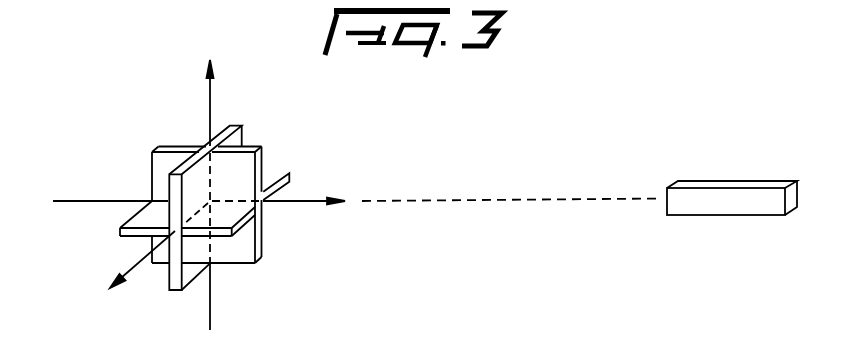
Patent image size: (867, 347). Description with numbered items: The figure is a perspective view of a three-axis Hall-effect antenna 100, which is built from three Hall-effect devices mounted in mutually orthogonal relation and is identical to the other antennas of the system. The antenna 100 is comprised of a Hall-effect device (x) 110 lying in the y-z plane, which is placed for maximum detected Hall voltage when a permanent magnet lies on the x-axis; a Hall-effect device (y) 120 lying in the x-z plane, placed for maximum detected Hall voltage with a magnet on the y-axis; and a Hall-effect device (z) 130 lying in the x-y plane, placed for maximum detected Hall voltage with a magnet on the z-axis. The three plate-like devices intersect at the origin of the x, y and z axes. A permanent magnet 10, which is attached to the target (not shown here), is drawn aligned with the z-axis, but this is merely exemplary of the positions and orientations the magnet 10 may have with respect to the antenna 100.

The permanent magnet 10 is at (735, 182).
The three-axis antenna 100 is at (126, 143).
The Hall-effect device (x) 110 is at (120, 237).
The Hall-effect device (y) 120 is at (262, 241).
The Hall-effect device (z) 130 is at (226, 130).